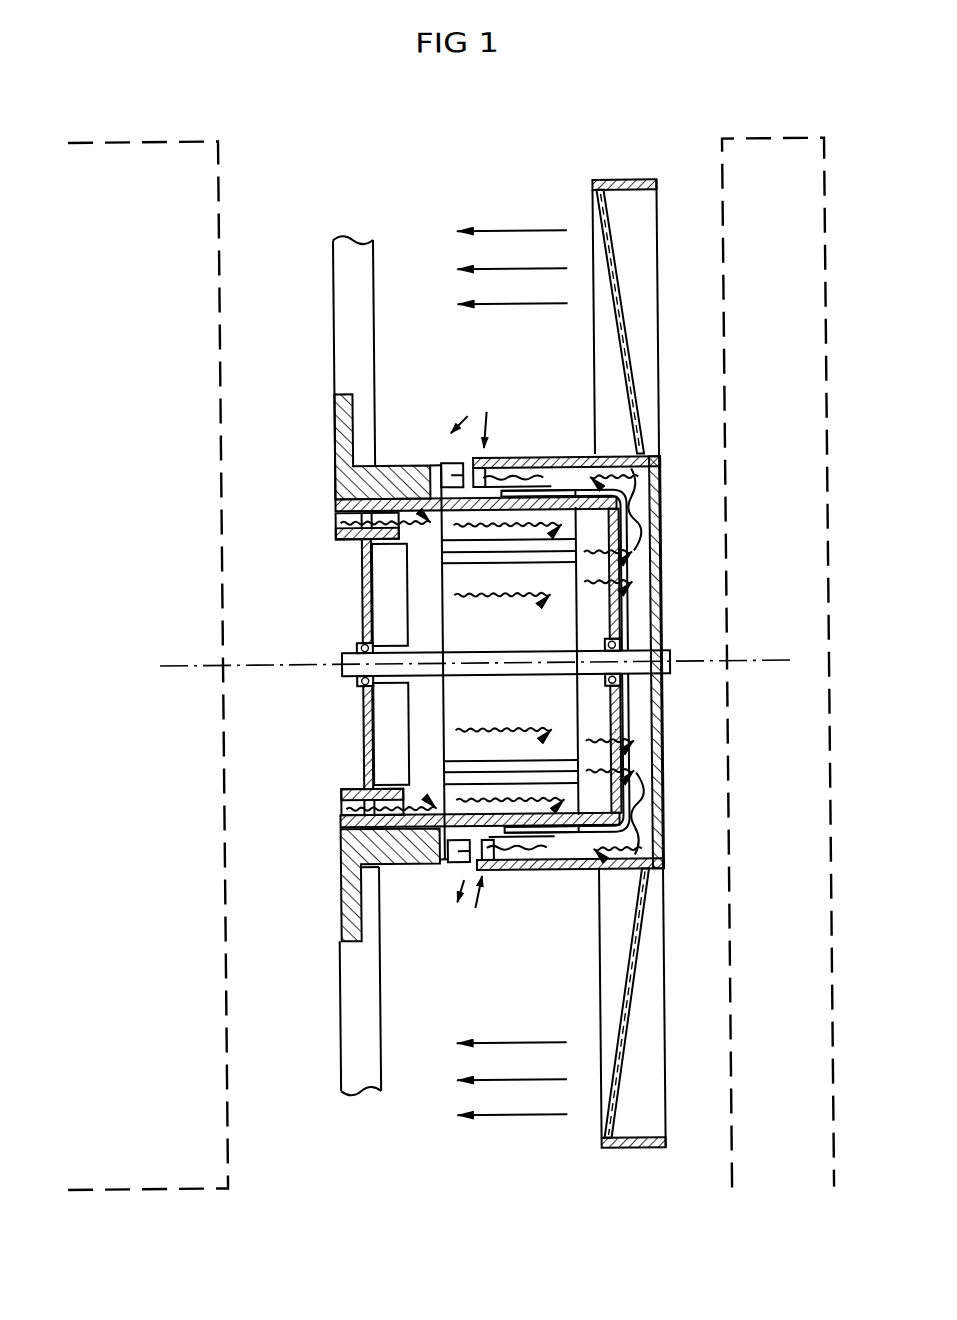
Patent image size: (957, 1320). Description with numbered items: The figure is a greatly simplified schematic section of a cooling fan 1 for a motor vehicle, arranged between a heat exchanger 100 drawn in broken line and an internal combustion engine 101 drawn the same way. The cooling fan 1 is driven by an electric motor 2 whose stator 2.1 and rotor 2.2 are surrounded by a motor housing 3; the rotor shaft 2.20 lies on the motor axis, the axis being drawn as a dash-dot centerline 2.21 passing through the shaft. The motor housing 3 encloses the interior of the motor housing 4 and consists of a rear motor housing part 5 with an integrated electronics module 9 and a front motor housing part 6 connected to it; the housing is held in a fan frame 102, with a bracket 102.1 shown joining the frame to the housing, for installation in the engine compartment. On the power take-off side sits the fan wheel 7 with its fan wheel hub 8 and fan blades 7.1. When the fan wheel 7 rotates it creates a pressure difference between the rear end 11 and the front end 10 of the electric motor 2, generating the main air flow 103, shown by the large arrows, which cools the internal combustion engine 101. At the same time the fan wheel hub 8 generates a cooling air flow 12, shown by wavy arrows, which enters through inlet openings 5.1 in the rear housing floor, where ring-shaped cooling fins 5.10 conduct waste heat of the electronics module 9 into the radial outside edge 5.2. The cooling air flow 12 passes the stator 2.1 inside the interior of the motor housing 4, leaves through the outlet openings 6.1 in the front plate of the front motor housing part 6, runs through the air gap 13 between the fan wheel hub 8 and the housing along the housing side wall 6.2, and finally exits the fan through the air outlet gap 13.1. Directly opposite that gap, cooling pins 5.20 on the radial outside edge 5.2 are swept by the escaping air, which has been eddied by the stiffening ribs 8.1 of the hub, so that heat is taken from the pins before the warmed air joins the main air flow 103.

The cooling fan 1 is at (468, 182).
The electric motor 2 is at (519, 641).
The stator 2.1 is at (575, 517).
The rotor 2.2 is at (575, 717).
The rotor shaft 2.20 is at (668, 655).
The axis of rotation 2.21 is at (774, 666).
The motor housing 3 is at (352, 601).
The interior of the motor housing 4 is at (427, 613).
The rear motor housing part 5 is at (352, 850).
The inlet openings 5.1 is at (332, 541).
The cooling fins 5.10 is at (362, 546).
The radial outside edge 5.2 is at (431, 478).
The cooling pins 5.20 is at (443, 456).
The front motor housing part 6 is at (613, 828).
The outlet openings 6.1 is at (607, 560).
The housing side wall 6.2 is at (518, 490).
The fan wheel 7 is at (634, 1074).
The fan blades 7.1 is at (622, 1094).
The fan wheel hub 8 is at (656, 793).
The stiffening ribs 8.1 is at (640, 576).
The electronics module 9 is at (388, 742).
The front end of the electric motor 10 is at (616, 599).
The rear end of the electric motor 11 is at (368, 708).
The cooling air flow 12 is at (503, 438).
The air gap 13 is at (567, 468).
The air outlet gap 13.1 is at (480, 428).
The heat exchanger 100 is at (787, 191).
The internal combustion engine 101 is at (165, 1165).
The fan frame 102 is at (356, 1075).
The tube bracket 102.1 is at (346, 889).
The main air flow 103 is at (528, 228).